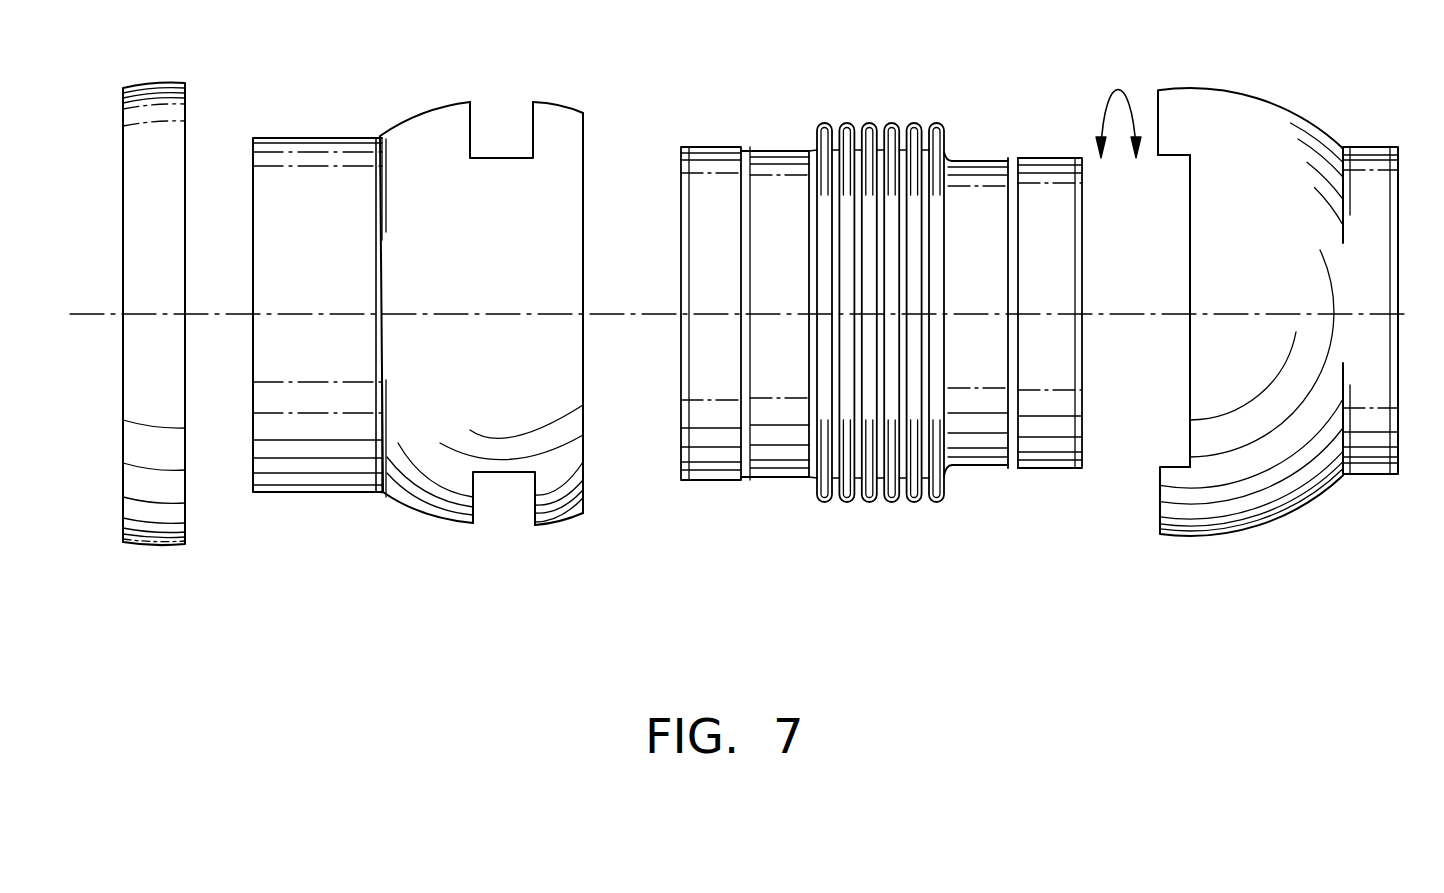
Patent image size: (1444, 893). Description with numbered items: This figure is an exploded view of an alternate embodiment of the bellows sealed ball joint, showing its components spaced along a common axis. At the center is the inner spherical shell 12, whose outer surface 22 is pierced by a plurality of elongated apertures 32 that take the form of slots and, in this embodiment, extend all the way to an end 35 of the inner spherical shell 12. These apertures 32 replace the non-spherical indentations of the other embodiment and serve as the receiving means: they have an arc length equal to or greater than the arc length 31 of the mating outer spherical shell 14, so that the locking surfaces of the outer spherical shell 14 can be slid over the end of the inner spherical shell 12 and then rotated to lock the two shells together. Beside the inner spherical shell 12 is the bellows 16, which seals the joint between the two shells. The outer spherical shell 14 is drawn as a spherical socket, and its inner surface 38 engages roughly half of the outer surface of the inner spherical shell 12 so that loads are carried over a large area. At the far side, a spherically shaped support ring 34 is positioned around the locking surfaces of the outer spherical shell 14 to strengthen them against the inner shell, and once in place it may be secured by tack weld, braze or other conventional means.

The inner spherical shell 12 is at (512, 284).
The outer spherical shell 14 is at (1266, 267).
The bellows 16 is at (979, 466).
The outer surface 22 is at (423, 490).
The arc length 31 is at (1108, 100).
The elongated apertures 32 is at (505, 122).
The support ring 34 is at (153, 545).
The end 35 is at (583, 178).
The inner surface 38 is at (1190, 362).